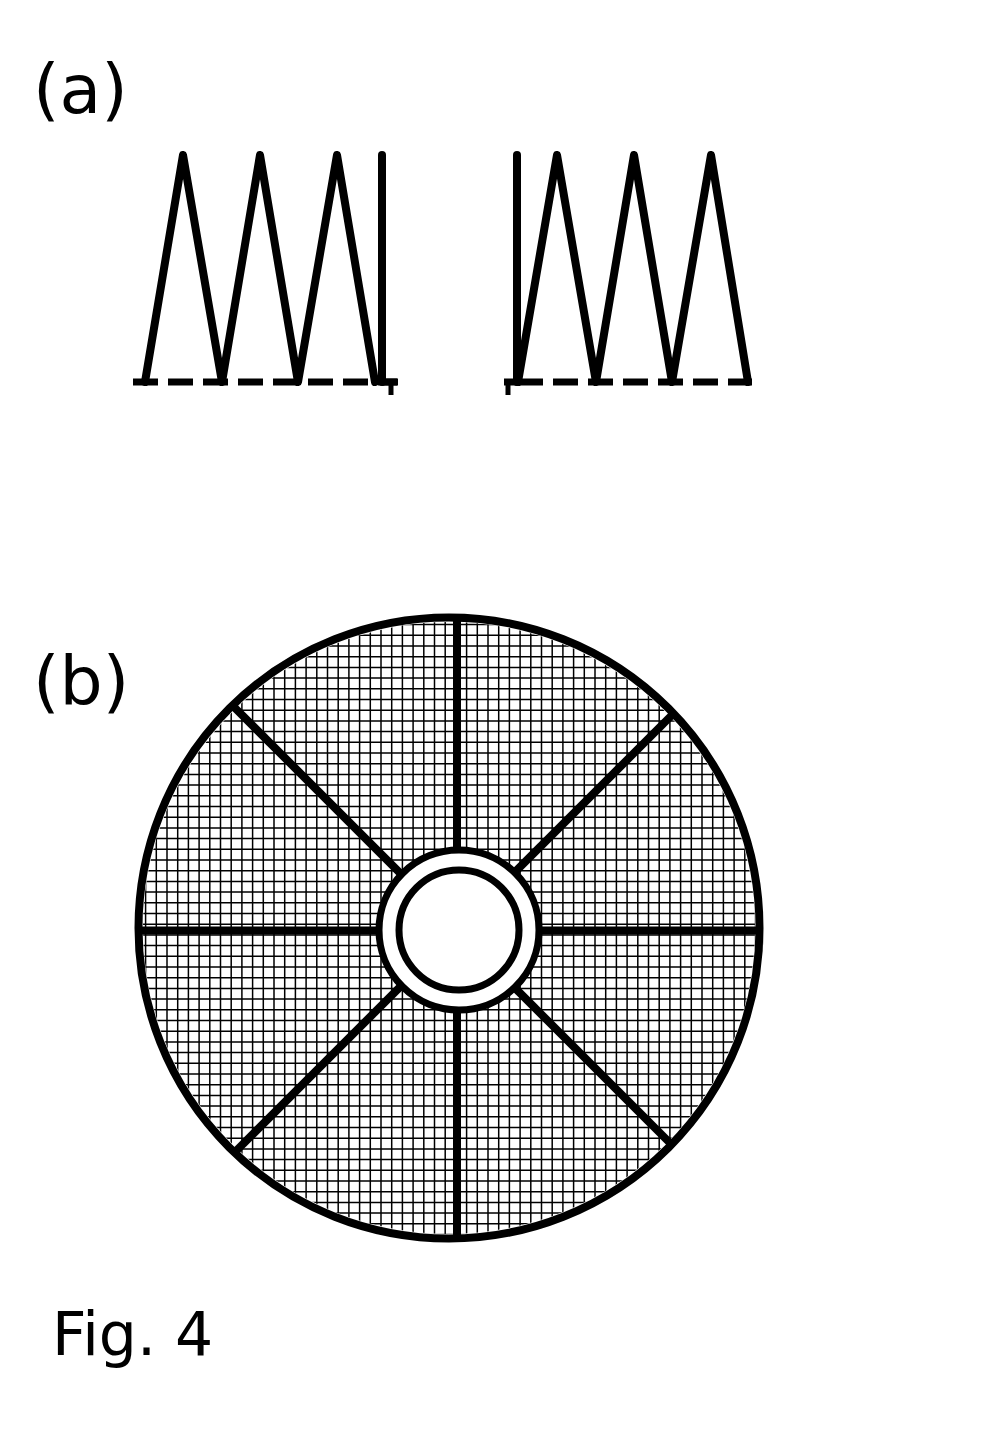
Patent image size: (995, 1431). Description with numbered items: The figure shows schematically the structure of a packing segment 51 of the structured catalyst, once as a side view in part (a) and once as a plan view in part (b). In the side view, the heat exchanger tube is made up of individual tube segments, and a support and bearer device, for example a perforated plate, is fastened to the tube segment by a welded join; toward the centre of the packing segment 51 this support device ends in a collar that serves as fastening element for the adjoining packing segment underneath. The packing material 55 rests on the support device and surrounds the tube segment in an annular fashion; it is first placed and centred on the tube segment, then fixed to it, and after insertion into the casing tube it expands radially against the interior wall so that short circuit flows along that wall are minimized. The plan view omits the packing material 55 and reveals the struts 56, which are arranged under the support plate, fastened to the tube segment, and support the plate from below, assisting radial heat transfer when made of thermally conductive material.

The packing segment 51 is at (452, 136).
The packing material 55 is at (731, 270).
The struts 56 is at (577, 1045).